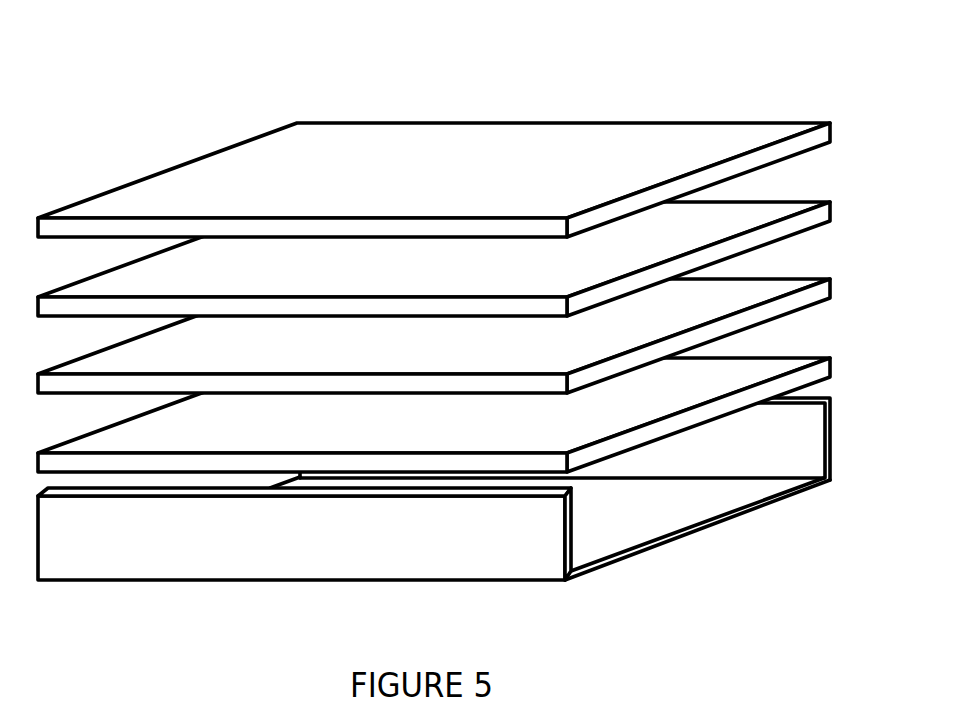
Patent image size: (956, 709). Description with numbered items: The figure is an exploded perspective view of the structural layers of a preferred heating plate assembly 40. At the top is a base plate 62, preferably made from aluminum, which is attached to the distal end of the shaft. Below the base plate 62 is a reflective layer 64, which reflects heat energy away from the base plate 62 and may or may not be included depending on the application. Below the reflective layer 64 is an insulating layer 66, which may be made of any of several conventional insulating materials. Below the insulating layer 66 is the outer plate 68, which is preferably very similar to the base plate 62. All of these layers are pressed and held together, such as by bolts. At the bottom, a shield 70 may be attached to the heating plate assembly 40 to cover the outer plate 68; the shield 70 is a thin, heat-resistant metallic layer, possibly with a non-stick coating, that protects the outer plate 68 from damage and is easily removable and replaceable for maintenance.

The heating plate assembly 40 is at (322, 70).
The base plate 62 is at (599, 157).
The reflective layer 64 is at (730, 215).
The insulating layer 66 is at (732, 290).
The outer plate 68 is at (728, 372).
The shield 70 is at (633, 525).